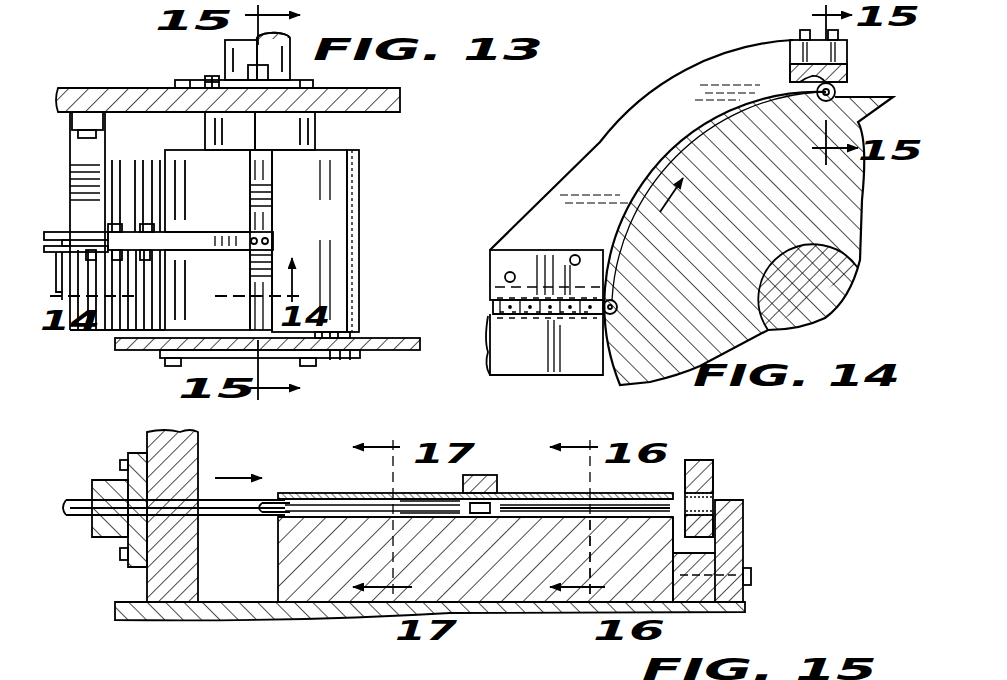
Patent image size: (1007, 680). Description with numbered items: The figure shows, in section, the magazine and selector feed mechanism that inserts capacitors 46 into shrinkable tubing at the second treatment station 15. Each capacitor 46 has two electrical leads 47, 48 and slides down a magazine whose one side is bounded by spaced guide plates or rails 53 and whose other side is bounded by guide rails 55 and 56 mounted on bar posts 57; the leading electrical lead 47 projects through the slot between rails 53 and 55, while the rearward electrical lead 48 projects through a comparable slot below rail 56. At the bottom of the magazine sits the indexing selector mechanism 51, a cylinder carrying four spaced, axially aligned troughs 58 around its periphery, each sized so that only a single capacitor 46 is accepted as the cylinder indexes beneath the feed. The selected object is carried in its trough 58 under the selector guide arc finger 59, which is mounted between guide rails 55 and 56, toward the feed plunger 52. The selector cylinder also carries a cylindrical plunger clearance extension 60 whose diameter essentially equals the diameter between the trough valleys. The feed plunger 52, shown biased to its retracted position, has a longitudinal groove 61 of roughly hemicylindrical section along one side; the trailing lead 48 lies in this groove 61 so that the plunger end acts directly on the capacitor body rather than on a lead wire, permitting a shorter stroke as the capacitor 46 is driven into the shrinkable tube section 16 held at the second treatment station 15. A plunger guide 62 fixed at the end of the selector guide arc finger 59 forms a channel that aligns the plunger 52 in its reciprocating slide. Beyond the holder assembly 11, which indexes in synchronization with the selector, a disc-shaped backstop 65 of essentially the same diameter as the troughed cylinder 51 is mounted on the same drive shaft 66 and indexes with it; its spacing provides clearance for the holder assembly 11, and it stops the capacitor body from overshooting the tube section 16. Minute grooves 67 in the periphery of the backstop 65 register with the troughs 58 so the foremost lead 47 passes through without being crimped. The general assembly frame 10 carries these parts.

In FIG. 13, the support plate 10 is at (143, 88).
In FIG. 13, the holder assembly 11 is at (372, 348).
In FIG. 15, the holder assembly 11 is at (697, 462).
In FIG. 15, the second treatment station 15 is at (708, 490).
In FIG. 15, the shrinkable tube section 16 is at (708, 505).
In FIG. 13, the capacitor 46 is at (66, 238).
In FIG. 14, the capacitor 46 is at (496, 330).
In FIG. 15, the capacitor 46 is at (520, 497).
In FIG. 13, the electrical lead 47 is at (108, 320).
In FIG. 14, the electrical lead 47 is at (538, 316).
In FIG. 15, the electrical lead 47 is at (602, 497).
In FIG. 13, the electrical lead 48 is at (132, 165).
In FIG. 15, the electrical lead 48 is at (335, 495).
In FIG. 13, the indexing selector mechanism 51 is at (358, 278).
In FIG. 14, the indexing selector mechanism 51 is at (843, 222).
In FIG. 15, the indexing selector mechanism 51 is at (520, 602).
In FIG. 13, the feed plunger 52 is at (260, 150).
In FIG. 15, the feed plunger 52 is at (242, 512).
In FIG. 14, the guide plates or rails 53 is at (500, 360).
In FIG. 13, the guide plates or rails 55 is at (54, 258).
In FIG. 14, the guide plates or rails 55 is at (492, 263).
In FIG. 13, the guide plates or rails 56 is at (44, 235).
In FIG. 13, the bar posts 57 is at (95, 162).
In FIG. 13, the troughs 58 is at (360, 312).
In FIG. 14, the troughs 58 is at (836, 95).
In FIG. 15, the troughs 58 is at (588, 525).
In FIG. 13, the selector guide arc finger 59 is at (198, 243).
In FIG. 14, the selector guide arc finger 59 is at (590, 175).
In FIG. 15, the selector guide arc finger 59 is at (482, 476).
In FIG. 13, the plunger clearance extension 60 is at (348, 202).
In FIG. 15, the plunger clearance extension 60 is at (305, 607).
In FIG. 15, the longitudinal groove 61 is at (268, 505).
In FIG. 13, the plunger guide 62 is at (272, 212).
In FIG. 14, the plunger guide 62 is at (848, 72).
In FIG. 15, the plunger guide 62 is at (410, 499).
In FIG. 13, the backstop 65 is at (326, 358).
In FIG. 15, the backstop 65 is at (742, 560).
In FIG. 13, the drive shaft 66 is at (208, 80).
In FIG. 14, the drive shaft 66 is at (820, 296).
In FIG. 15, the drive shaft 66 is at (242, 608).
In FIG. 15, the minute grooves 67 is at (745, 503).